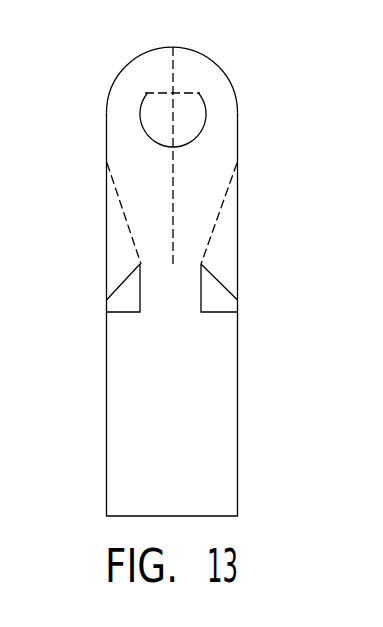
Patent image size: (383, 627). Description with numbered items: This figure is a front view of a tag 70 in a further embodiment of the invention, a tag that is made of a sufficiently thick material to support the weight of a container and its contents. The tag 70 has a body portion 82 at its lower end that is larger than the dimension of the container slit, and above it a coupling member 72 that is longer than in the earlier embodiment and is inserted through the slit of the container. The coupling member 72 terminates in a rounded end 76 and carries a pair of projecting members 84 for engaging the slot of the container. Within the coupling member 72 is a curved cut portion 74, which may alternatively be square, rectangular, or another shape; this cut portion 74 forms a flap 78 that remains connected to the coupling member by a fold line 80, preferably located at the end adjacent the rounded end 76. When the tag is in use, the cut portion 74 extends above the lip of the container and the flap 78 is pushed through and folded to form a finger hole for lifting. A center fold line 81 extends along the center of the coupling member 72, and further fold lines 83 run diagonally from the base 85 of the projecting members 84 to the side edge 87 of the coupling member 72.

The tag 70 is at (258, 232).
The coupling member 72 is at (210, 178).
The cut portion 74 is at (206, 121).
The rounded end 76 is at (177, 48).
The flap 78 is at (155, 122).
The fold line 80 is at (173, 93).
The center fold line 81 is at (173, 198).
The body portion 82 is at (210, 405).
The fold lines 83 is at (238, 250).
The projecting members 84 is at (238, 300).
The base 85 is at (201, 264).
The side edge 87 is at (238, 142).